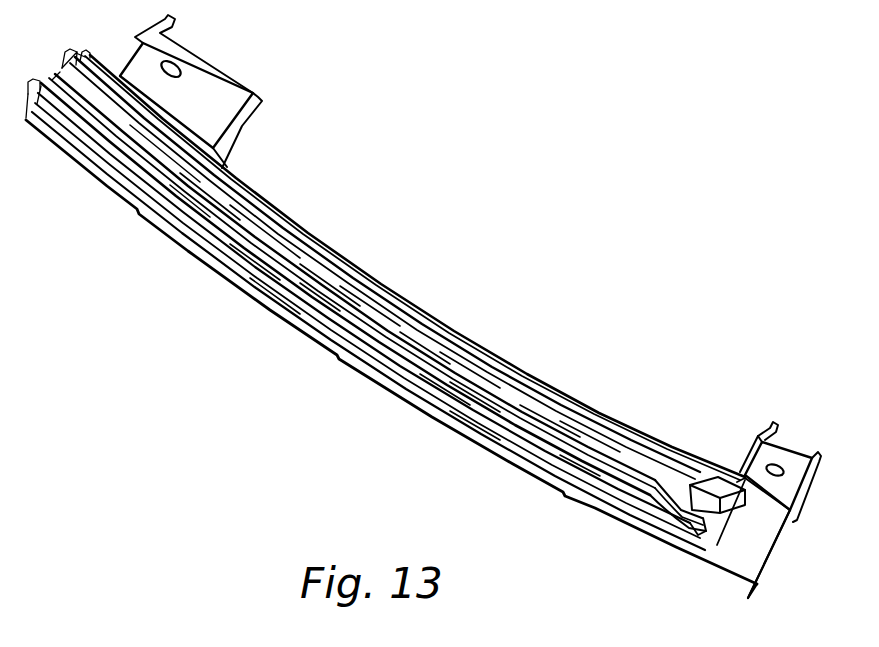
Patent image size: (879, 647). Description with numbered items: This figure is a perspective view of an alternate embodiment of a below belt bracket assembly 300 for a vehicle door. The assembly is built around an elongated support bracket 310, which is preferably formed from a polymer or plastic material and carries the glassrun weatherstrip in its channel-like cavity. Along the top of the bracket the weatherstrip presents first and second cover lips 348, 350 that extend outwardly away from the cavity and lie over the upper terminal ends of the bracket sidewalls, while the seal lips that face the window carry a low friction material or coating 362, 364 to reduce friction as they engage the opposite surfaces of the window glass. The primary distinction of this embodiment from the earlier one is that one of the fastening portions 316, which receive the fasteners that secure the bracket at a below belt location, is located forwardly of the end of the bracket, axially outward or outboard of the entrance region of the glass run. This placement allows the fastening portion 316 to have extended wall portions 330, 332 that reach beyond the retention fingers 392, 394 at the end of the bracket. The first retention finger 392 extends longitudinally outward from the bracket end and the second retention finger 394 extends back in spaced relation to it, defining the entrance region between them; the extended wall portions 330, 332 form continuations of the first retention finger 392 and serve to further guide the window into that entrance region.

The below belt bracket assembly 300 is at (456, 263).
The support bracket 310 is at (478, 438).
The fastening portion 316 is at (220, 72).
The extended wall portion 330 is at (728, 577).
The extended wall portion 332 is at (767, 512).
The first cover lip 348 is at (226, 270).
The second cover lip 350 is at (306, 232).
The low friction material or coating 362 is at (340, 307).
The low friction material or coating 364 is at (461, 355).
The first retention finger 392 is at (658, 546).
The second retention finger 394 is at (709, 486).